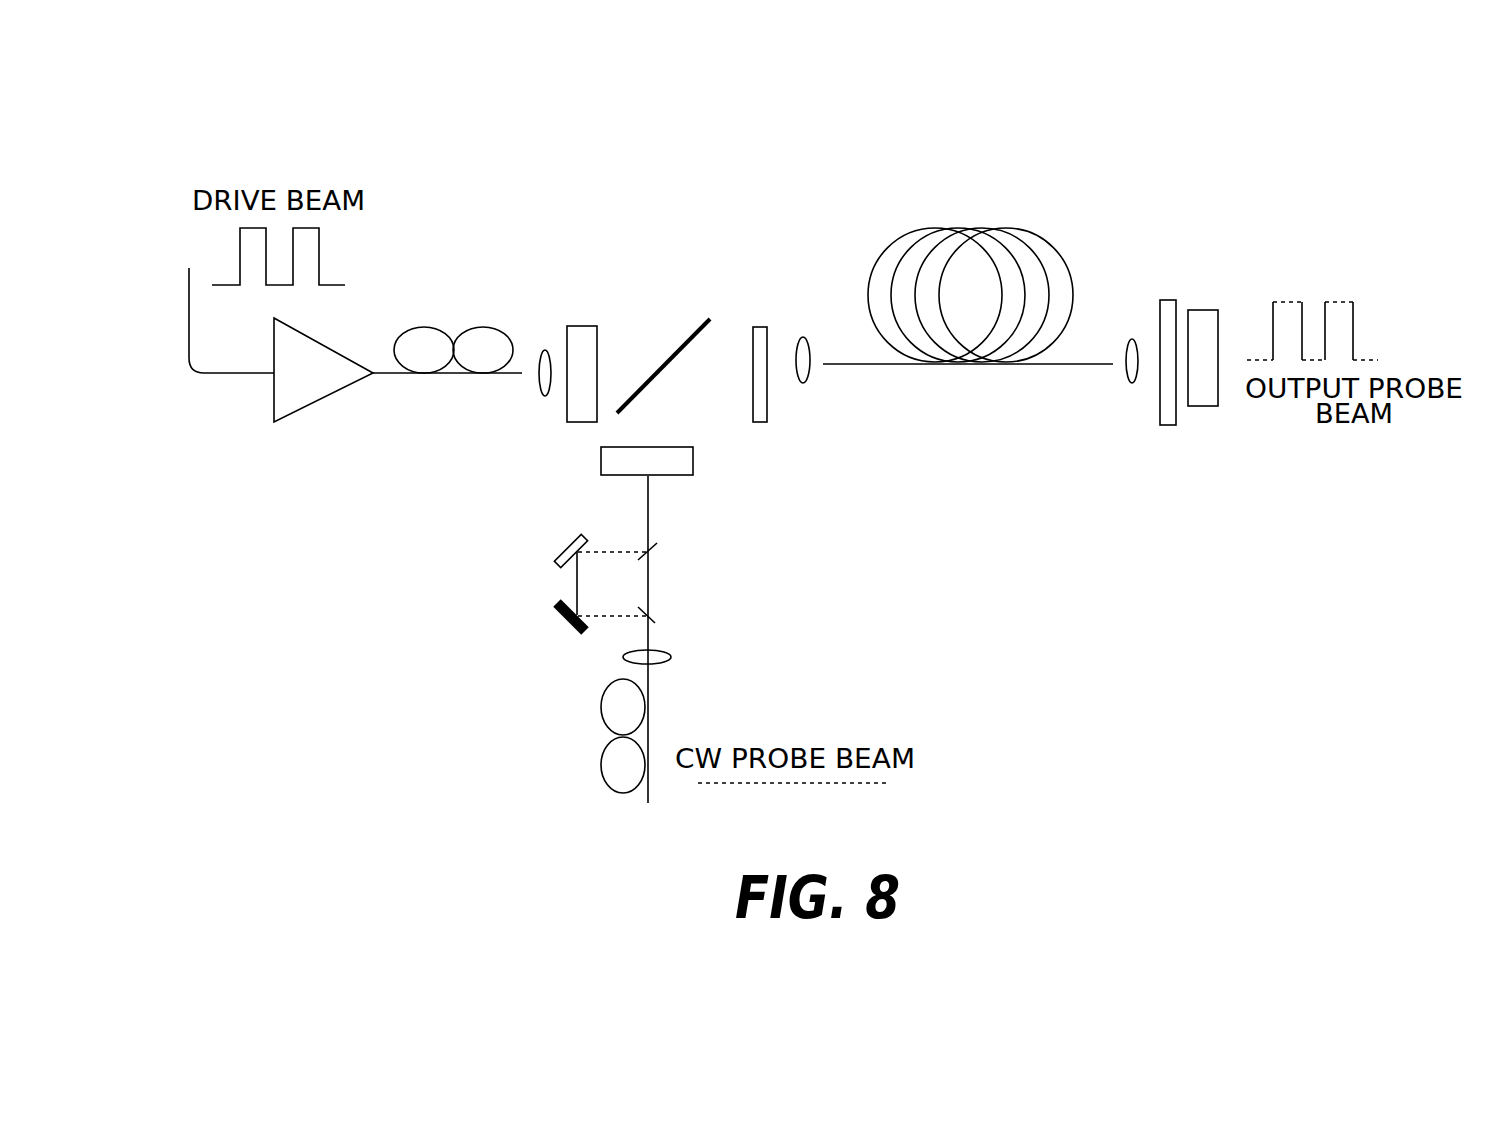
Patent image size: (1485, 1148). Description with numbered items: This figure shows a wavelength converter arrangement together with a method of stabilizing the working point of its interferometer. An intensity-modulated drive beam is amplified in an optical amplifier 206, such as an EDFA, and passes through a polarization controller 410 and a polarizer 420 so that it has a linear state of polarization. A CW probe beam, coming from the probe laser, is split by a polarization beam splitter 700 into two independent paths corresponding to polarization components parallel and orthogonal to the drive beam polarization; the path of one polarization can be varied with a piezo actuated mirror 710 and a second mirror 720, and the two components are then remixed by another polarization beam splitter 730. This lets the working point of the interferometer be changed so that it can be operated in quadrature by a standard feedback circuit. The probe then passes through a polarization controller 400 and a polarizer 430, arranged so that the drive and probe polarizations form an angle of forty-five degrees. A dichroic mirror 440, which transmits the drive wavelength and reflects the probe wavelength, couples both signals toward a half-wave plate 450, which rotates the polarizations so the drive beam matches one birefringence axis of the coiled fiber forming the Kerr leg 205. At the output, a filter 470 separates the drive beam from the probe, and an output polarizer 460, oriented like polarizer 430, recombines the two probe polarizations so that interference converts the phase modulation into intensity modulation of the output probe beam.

The Kerr leg 205 is at (973, 228).
The optical amplifier 206 is at (323, 400).
The polarization controller 400 is at (612, 737).
The polarization controller 410 is at (455, 330).
The polarizer 420 is at (583, 325).
The polarizer 430 is at (693, 459).
The dichroic mirror 440 is at (690, 333).
The half-wave plate 450 is at (760, 327).
The output polarizer 460 is at (1203, 310).
The filter 470 is at (1168, 426).
The polarization beam splitter 700 is at (652, 620).
The piezo actuated mirror 710 is at (558, 548).
The second mirror 720 is at (560, 627).
The polarization beam splitter 730 is at (652, 548).